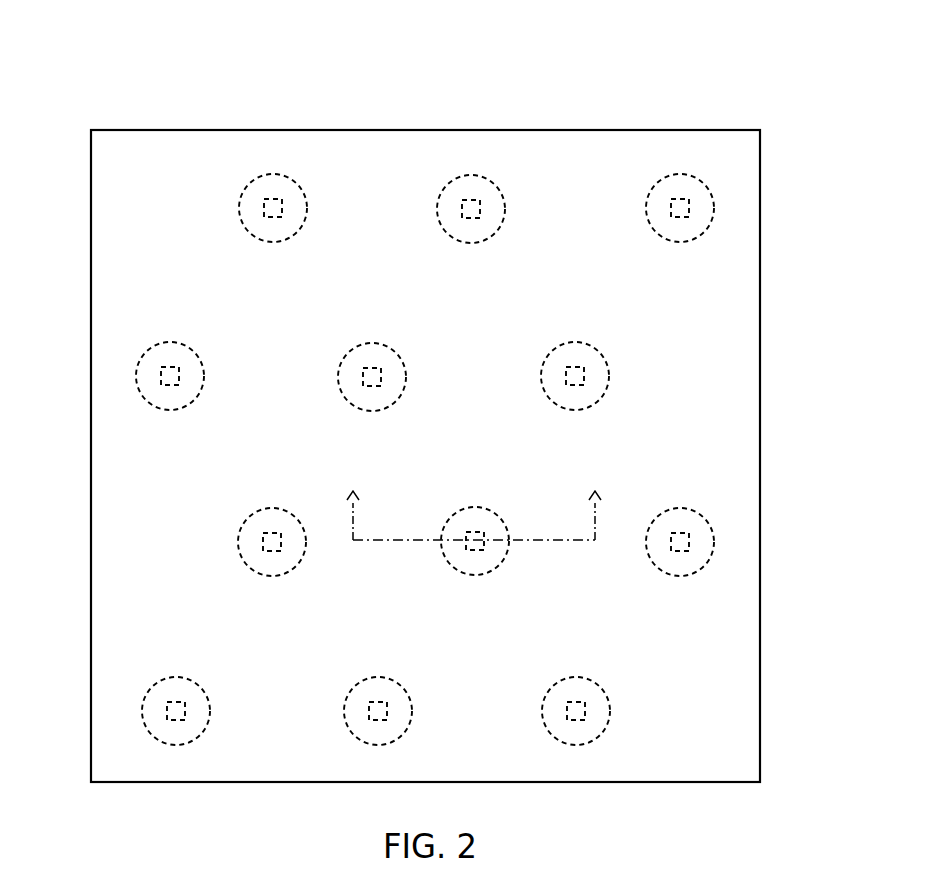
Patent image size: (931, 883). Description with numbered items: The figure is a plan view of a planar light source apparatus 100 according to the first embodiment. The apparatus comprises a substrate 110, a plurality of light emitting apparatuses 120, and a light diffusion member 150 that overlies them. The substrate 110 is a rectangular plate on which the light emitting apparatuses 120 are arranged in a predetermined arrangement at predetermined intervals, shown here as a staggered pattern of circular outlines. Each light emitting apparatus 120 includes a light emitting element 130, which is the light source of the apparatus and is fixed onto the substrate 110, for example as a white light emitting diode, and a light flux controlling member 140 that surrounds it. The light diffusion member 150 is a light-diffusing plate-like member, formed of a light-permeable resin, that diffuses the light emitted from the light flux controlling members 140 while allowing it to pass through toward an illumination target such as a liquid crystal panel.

The planar light source apparatus 100 is at (761, 47).
The substrate 110 is at (343, 151).
The light emitting apparatus 120 is at (397, 328).
The light emitting element 130 is at (367, 372).
The light flux controlling member 140 is at (358, 395).
The light diffusion member 150 is at (220, 153).